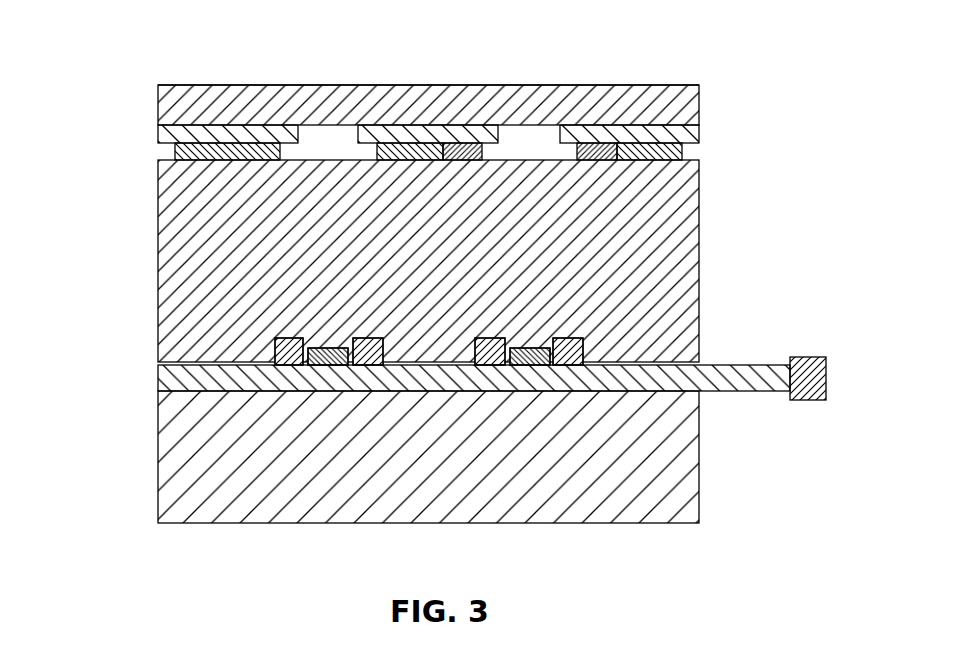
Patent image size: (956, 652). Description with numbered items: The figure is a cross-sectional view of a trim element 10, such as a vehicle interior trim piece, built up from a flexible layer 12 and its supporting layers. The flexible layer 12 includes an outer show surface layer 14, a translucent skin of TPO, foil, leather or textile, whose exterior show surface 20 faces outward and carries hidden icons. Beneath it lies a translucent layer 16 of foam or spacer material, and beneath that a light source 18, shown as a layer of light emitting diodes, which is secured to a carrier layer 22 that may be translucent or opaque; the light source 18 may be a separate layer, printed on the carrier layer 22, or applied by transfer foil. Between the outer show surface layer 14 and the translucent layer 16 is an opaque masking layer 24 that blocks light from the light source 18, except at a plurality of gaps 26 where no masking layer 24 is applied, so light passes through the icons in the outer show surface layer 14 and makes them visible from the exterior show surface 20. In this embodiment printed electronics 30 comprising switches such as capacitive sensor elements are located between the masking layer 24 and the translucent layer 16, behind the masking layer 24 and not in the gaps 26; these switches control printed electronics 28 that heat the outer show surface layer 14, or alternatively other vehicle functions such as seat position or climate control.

The trim element 10 is at (711, 75).
The flexible layer 12 is at (121, 202).
The outer show surface layer 14 is at (232, 88).
The translucent layer 16 is at (158, 258).
The light source 18 is at (160, 385).
The exterior show surface 20 is at (577, 85).
The carrier layer 22 is at (160, 445).
The masking layer 24 is at (375, 133).
The gaps 26 is at (320, 134).
The printed electronics 28 is at (418, 148).
The printed electronics 30 is at (465, 148).